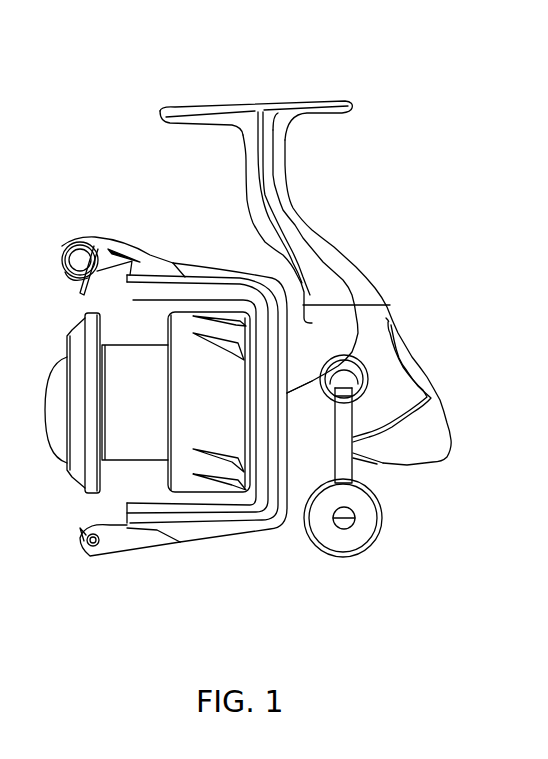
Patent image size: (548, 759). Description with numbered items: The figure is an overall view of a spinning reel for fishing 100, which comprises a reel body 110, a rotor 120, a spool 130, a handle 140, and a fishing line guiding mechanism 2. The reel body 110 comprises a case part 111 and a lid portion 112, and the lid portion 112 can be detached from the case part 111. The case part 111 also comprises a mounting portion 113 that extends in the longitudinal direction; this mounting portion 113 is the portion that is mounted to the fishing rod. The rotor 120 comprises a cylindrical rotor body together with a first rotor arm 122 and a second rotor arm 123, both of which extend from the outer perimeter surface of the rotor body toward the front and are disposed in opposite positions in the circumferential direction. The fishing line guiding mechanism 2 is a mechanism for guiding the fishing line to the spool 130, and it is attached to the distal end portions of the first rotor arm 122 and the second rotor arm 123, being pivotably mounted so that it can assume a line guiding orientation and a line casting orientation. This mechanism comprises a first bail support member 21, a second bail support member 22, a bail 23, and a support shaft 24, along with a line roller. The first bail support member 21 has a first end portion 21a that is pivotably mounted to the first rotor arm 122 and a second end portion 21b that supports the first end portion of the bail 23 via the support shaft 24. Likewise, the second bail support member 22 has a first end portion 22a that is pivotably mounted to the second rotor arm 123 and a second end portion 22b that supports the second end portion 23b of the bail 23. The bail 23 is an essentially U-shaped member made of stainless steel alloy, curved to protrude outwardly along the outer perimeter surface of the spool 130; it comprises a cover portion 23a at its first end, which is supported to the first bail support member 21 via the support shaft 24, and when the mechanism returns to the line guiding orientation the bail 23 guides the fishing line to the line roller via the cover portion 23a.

The spinning reel for fishing 100 is at (388, 68).
The reel body 110 is at (338, 246).
The case part 111 is at (390, 308).
The lid portion 112 is at (337, 322).
The mounting portion 113 is at (300, 101).
The rotor 120 is at (212, 268).
The first rotor arm 122 is at (241, 278).
The second rotor arm 123 is at (223, 538).
The spool 130 is at (128, 343).
The handle 140 is at (357, 477).
The fishing line guiding mechanism 2 is at (63, 225).
The first bail support member 21 is at (128, 238).
The first end portion 21a is at (175, 258).
The second end portion 21b is at (86, 236).
The second bail support member 22 is at (123, 553).
The first end portion 22a is at (157, 548).
The second end portion 22b is at (90, 560).
The bail 23 is at (75, 293).
The cover portion 23a is at (65, 272).
The second end portion 23b is at (85, 545).
The support shaft 24 is at (73, 257).